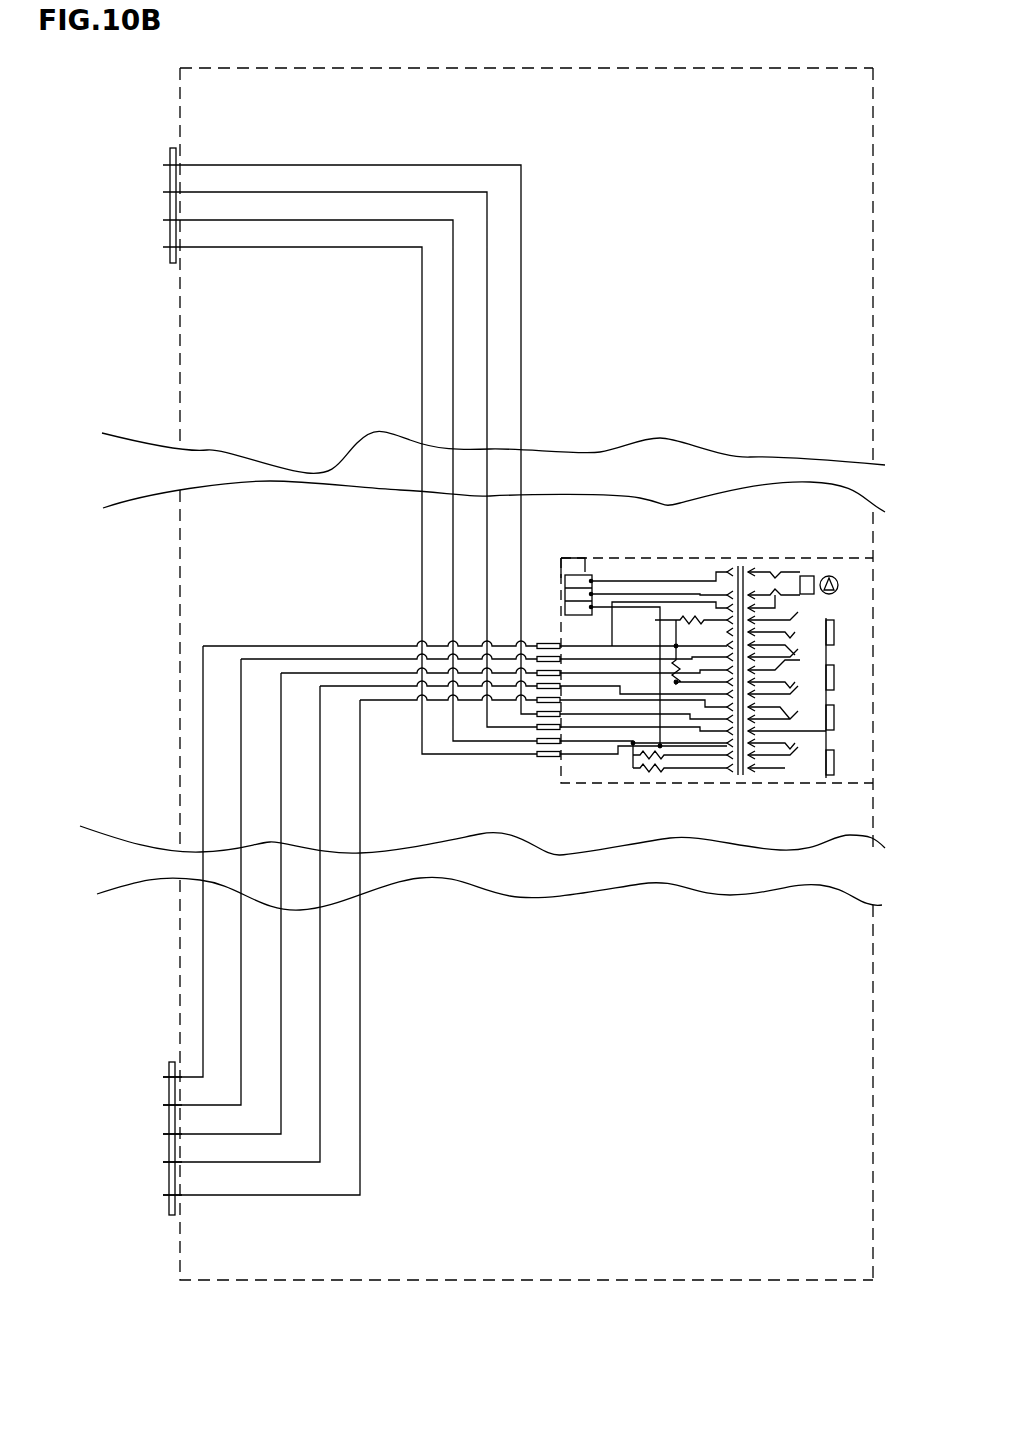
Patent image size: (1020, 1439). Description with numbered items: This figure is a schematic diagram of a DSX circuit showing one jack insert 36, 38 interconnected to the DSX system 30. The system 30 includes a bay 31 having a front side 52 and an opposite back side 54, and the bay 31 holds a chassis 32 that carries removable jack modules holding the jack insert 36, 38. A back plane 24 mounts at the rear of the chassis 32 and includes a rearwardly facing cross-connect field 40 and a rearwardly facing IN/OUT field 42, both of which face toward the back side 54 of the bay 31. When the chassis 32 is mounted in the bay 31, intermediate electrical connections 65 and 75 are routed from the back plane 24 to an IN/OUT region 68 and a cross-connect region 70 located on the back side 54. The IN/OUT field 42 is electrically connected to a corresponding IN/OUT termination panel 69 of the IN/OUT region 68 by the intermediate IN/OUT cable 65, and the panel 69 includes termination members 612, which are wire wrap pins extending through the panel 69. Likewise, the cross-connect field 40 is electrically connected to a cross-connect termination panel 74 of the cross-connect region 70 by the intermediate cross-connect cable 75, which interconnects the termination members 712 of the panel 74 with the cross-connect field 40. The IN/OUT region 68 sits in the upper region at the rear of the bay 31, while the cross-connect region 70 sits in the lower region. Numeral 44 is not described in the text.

The bay 31 is at (578, 67).
The front side 52 is at (872, 226).
The back side 54 is at (174, 354).
The DSX system 30 is at (124, 146).
The IN/OUT region 68 is at (108, 232).
The IN/OUT termination panel 69 is at (170, 162).
The termination members 612 is at (172, 251).
The intermediate IN/OUT cable 65 is at (423, 307).
The intermediate cross-connect cable 75 is at (204, 993).
The cross-connect field 40 is at (537, 622).
The IN/OUT field 42 is at (555, 762).
The connector pins 44 is at (540, 739).
The back plane 24 is at (549, 782).
The chassis 32 is at (694, 786).
The jack insert 36 is at (754, 552).
The jack insert 38 is at (850, 698).
The cross-connect region 70 is at (103, 1081).
The cross-connect termination panel 74 is at (167, 1075).
The termination members 712 is at (164, 1197).